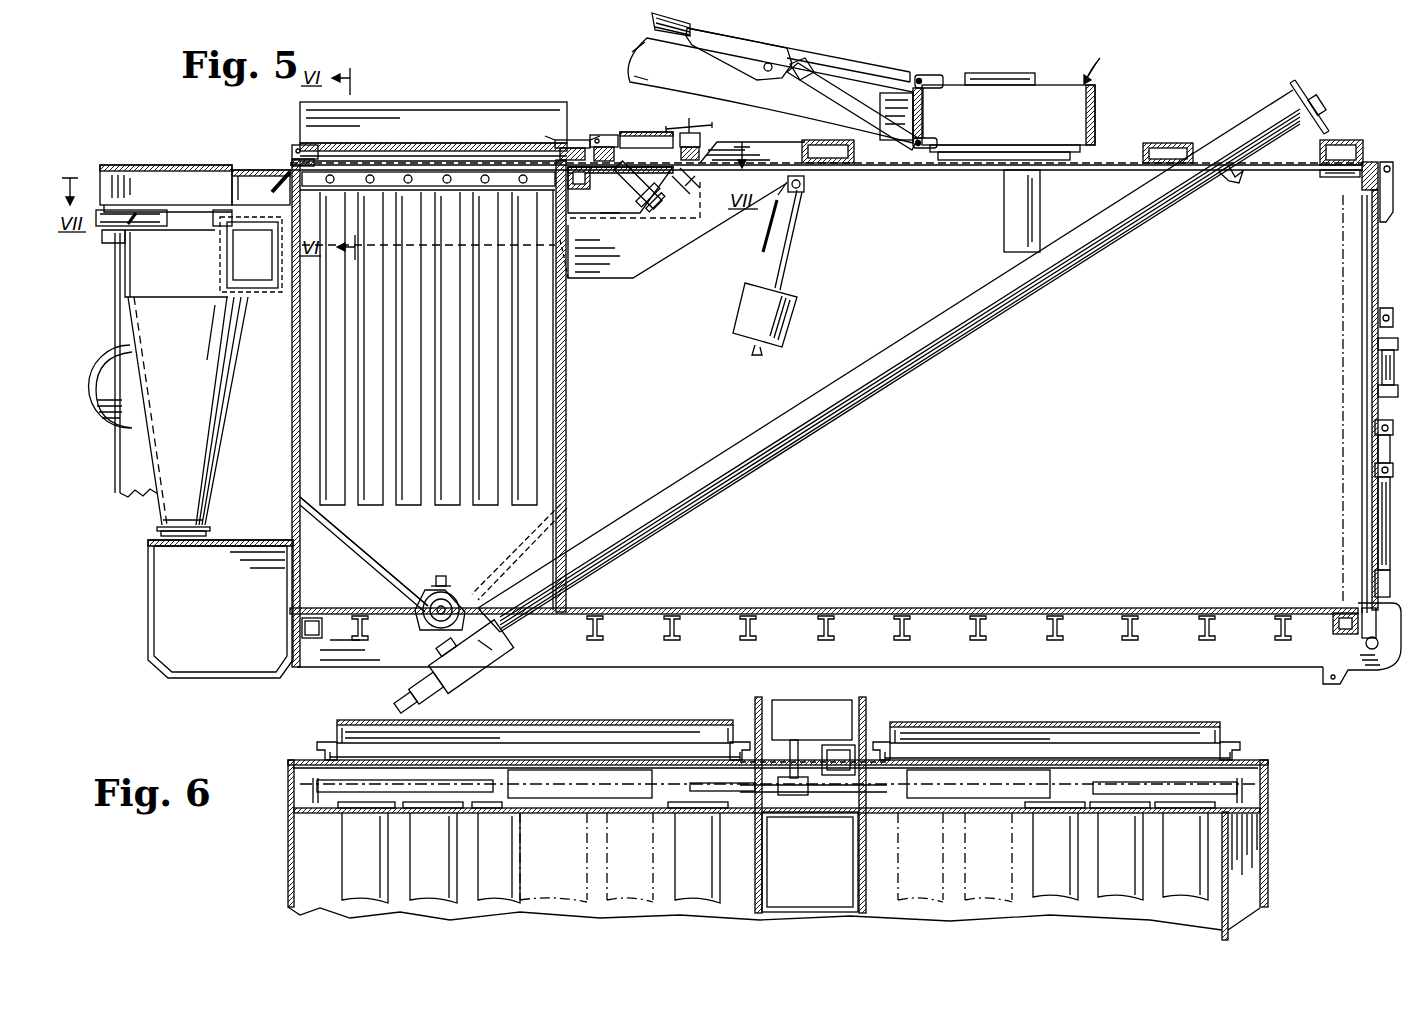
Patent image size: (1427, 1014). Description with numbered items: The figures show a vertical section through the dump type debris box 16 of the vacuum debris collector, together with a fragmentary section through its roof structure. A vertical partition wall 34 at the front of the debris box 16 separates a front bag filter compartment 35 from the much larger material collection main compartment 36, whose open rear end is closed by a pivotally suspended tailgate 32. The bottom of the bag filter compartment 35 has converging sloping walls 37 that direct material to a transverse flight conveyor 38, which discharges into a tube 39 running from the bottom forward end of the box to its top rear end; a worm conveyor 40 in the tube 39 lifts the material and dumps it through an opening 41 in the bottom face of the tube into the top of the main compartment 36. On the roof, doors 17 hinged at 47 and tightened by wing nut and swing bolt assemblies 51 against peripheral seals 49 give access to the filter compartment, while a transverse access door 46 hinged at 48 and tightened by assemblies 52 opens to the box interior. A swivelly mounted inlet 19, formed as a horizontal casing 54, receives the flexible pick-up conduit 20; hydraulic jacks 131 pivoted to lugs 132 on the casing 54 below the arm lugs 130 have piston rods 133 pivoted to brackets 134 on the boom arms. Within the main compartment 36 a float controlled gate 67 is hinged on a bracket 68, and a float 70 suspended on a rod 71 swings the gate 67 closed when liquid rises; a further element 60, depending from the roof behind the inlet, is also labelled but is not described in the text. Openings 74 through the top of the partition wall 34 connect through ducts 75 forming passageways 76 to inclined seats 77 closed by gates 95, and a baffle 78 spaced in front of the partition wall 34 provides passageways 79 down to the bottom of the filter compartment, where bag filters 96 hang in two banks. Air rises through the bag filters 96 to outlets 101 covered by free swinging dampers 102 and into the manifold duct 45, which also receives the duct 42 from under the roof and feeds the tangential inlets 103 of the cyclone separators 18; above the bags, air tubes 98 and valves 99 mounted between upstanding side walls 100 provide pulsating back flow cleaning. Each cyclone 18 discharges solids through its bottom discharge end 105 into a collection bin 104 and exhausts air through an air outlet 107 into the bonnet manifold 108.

In FIG. 5, the debris box 16 is at (1118, 162).
In FIG. 5, the doors 17 is at (438, 143).
In FIG. 6, the doors 17 is at (590, 720).
In FIG. 5, the cyclone separators 18 is at (188, 350).
In FIG. 5, the inlet 19 is at (1101, 60).
In FIG. 5, the debris pick-up conduit 20 is at (630, 50).
In FIG. 5, the tailgate 32 is at (1382, 272).
In FIG. 5, the partition wall 34 is at (567, 412).
In FIG. 5, the bag filter compartment 35 is at (479, 558).
In FIG. 5, the main compartment 36 is at (764, 394).
In FIG. 5, the sloping walls 37 is at (374, 566).
In FIG. 5, the flight conveyor 38 is at (432, 594).
In FIG. 5, the tube 39 is at (634, 522).
In FIG. 5, the worm conveyor 40 is at (478, 672).
In FIG. 5, the opening 41 is at (1222, 184).
In FIG. 5, the duct 42 is at (566, 286).
In FIG. 6, the duct 42 is at (870, 880).
In FIG. 5, the manifold duct 45 is at (248, 175).
In FIG. 5, the access door 46 is at (640, 132).
In FIG. 5, the hinge 47 is at (300, 145).
In FIG. 5, the hinge 48 is at (594, 135).
In FIG. 6, the peripheral seals 49 is at (322, 742).
In FIG. 5, the wing nut and swing bolt assemblies 51 is at (560, 140).
In FIG. 5, the wing nut and swing bolt assemblies 52 is at (694, 130).
In FIG. 5, the horizontal casing 54 is at (1044, 128).
In FIG. 5, the baffle 60 is at (1042, 203).
In FIG. 5, the float controlled gate 67 is at (760, 236).
In FIG. 5, the bracket 68 is at (803, 205).
In FIG. 5, the float 70 is at (798, 312).
In FIG. 5, the rod 71 is at (790, 246).
In FIG. 5, the openings 74 is at (578, 214).
In FIG. 5, the duct 75 is at (624, 222).
In FIG. 5, the passageway 76 is at (608, 198).
In FIG. 5, the seat 77 is at (658, 217).
In FIG. 5, the baffle 78 is at (567, 360).
In FIG. 5, the passageways 79 is at (567, 470).
In FIG. 5, the gates 95 is at (680, 176).
In FIG. 5, the bag filters 96 is at (470, 506).
In FIG. 6, the bag filters 96 is at (1182, 880).
In FIG. 6, the air tubes 98 is at (712, 780).
In FIG. 6, the valves 99 is at (824, 726).
In FIG. 6, the side walls 100 is at (760, 712).
In FIG. 5, the outlets 101 is at (325, 175).
In FIG. 6, the outlets 101 is at (532, 770).
In FIG. 5, the dampers 102 is at (280, 186).
In FIG. 5, the tangential inlets 103 is at (258, 288).
In FIG. 5, the collection bin 104 is at (160, 612).
In FIG. 5, the solids bottom discharge ends 105 is at (157, 529).
In FIG. 5, the air outlet 107 is at (182, 226).
In FIG. 5, the bonnet manifold 108 is at (128, 172).
In FIG. 5, the arm lugs 130 is at (925, 75).
In FIG. 5, the hydraulic jacks 131 is at (800, 88).
In FIG. 5, the lugs 132 is at (920, 160).
In FIG. 5, the piston rod 133 is at (828, 57).
In FIG. 5, the bracket 134 is at (757, 48).